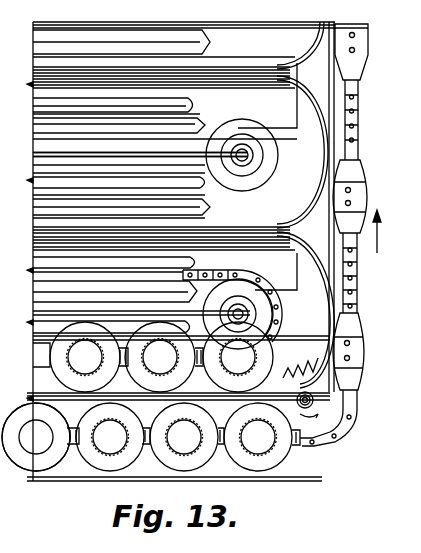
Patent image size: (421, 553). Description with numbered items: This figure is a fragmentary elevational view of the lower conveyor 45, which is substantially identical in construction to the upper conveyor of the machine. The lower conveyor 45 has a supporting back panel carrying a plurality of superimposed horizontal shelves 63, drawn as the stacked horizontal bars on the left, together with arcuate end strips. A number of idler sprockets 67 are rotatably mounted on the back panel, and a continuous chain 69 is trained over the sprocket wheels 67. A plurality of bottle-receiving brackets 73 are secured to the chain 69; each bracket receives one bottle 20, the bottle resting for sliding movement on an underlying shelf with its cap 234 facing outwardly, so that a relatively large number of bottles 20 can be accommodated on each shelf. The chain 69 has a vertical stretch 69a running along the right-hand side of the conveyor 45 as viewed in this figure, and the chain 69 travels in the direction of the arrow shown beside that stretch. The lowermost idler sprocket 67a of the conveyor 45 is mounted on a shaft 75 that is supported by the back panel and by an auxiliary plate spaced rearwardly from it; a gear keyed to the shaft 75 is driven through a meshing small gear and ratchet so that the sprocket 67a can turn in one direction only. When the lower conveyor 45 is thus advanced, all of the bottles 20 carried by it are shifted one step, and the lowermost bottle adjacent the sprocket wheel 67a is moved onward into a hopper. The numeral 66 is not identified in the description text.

The bottle 20 is at (328, 440).
The cap 234 is at (37, 440).
The lower conveyor 45 is at (267, 176).
The horizontal shelves 63 is at (190, 143).
The idler sprockets 67 is at (263, 167).
The continuous chain 69 is at (220, 271).
The chain link 66 is at (356, 141).
The bottle-receiving brackets 73 is at (358, 196).
The vertical stretch 69a is at (350, 293).
The lowermost idler sprocket 67a is at (328, 440).
The shaft 75 is at (316, 399).